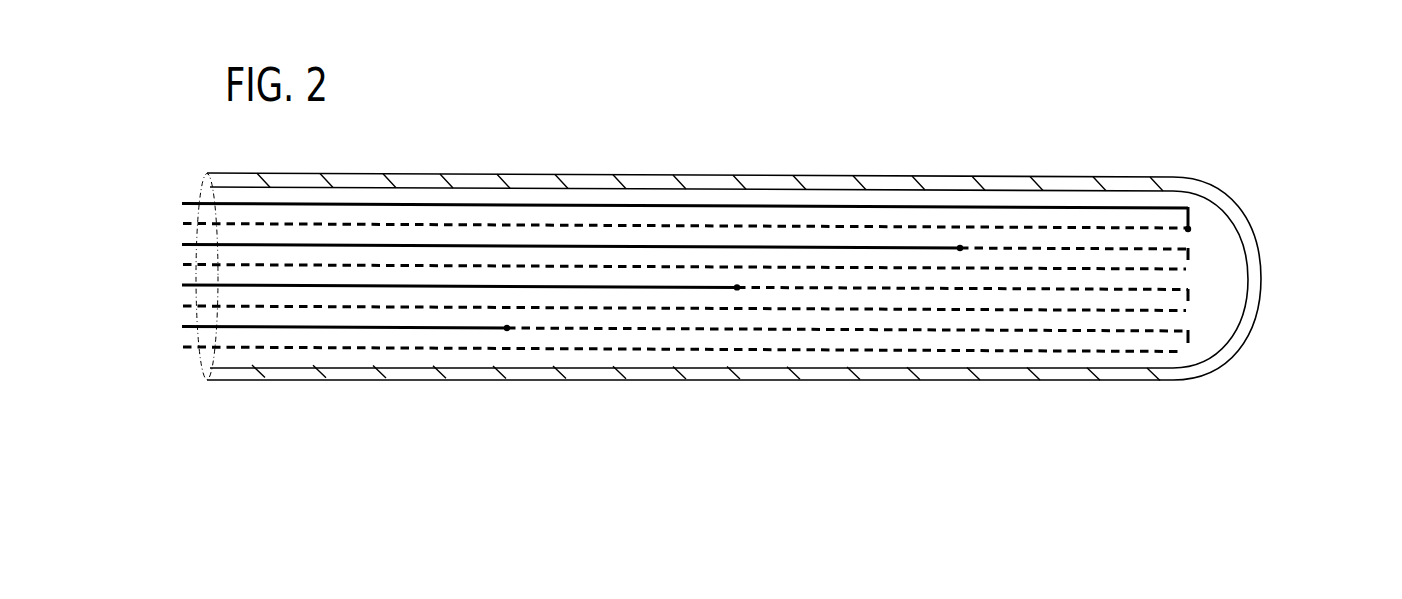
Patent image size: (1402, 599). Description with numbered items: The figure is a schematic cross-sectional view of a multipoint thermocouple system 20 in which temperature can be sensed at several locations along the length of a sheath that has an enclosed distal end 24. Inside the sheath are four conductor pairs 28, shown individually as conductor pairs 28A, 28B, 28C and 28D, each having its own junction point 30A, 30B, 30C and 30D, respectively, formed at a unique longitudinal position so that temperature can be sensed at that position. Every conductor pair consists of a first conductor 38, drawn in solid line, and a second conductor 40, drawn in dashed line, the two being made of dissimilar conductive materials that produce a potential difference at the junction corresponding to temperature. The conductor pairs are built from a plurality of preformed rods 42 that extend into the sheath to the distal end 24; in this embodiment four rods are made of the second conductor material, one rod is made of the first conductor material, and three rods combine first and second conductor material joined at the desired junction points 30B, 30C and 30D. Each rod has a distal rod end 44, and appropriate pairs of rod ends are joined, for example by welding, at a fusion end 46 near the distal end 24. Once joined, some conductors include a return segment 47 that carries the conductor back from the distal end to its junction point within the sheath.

The thermocouple system 20 is at (1014, 156).
The enclosed distal end 24 is at (1132, 185).
The conductor pairs 28 is at (165, 150).
The first conductor pair 28A is at (1208, 220).
The second conductor pair 28B is at (1202, 260).
The third conductor pair 28C is at (1205, 300).
The fourth conductor pair 28D is at (1208, 344).
The junction point 30A is at (1192, 232).
The junction point 30B is at (960, 246).
The junction point 30C is at (736, 286).
The junction point 30D is at (507, 330).
The first conductor 38 is at (255, 203).
The second conductor 40 is at (182, 223).
The rods 42 is at (1013, 270).
The distal rod end 44 is at (1175, 362).
The fusion end 46 is at (1191, 221).
The return segment 47 is at (832, 288).